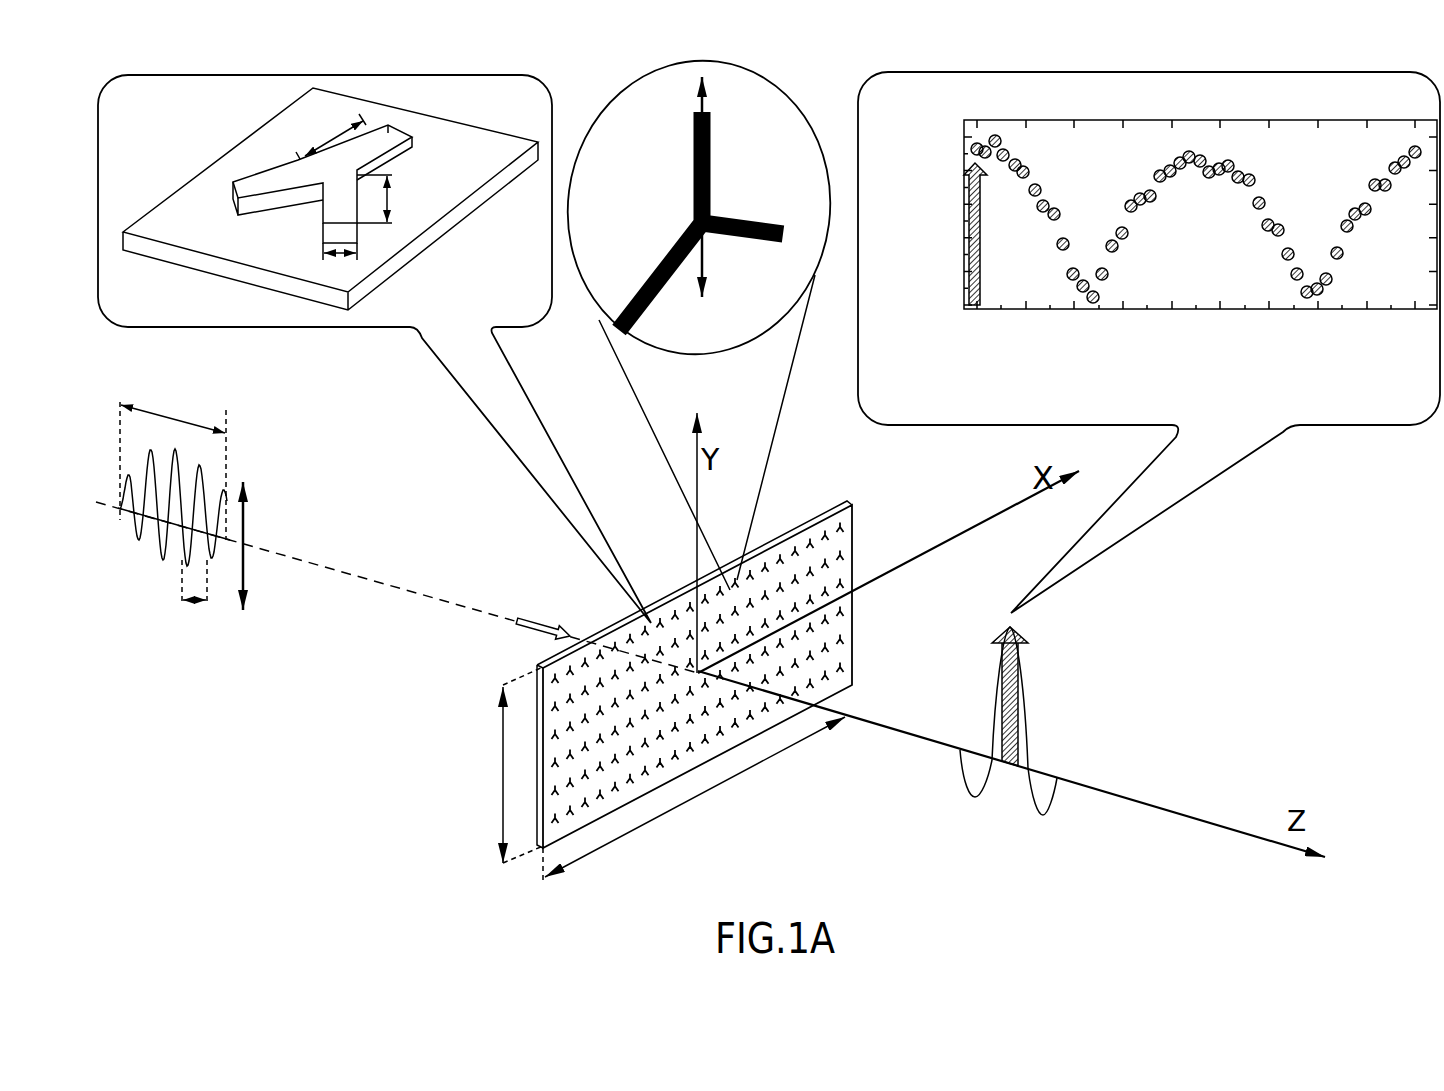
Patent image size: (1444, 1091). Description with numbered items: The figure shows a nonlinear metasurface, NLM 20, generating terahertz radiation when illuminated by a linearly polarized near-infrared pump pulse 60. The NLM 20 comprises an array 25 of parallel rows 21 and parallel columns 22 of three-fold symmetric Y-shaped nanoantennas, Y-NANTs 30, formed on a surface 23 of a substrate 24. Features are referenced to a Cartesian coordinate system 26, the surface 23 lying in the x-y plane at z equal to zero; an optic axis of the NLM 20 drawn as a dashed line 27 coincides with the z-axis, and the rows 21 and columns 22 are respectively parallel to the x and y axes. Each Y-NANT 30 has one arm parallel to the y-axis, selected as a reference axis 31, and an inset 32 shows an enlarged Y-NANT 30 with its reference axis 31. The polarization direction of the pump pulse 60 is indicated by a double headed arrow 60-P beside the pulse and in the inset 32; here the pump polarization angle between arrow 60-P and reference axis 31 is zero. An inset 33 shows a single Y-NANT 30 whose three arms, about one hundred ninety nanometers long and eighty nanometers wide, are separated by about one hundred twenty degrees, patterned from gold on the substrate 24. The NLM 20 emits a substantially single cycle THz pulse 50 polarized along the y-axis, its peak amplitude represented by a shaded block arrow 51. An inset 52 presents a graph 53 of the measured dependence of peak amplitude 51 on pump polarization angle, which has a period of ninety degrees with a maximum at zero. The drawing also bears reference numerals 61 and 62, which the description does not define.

The NLM 20 is at (523, 654).
The rows 21 is at (850, 555).
The columns 22 is at (823, 523).
The surface 23 is at (534, 835).
The substrate 24 is at (574, 834).
The array 25 is at (674, 675).
The Cartesian coordinate system 26 is at (700, 678).
The dashed line 27 is at (278, 552).
The Y-NANT 30 is at (683, 209).
The reference axis 31 is at (712, 112).
The inset 32 is at (699, 317).
The inset 33 is at (205, 75).
The THz pulse 50 is at (1063, 716).
The shaded block arrow 51 is at (1021, 667).
The inset 52 is at (1149, 325).
The graph 53 is at (1262, 165).
The NIR pump pulse 60 is at (141, 511).
The double headed arrow 60-P is at (704, 243).
The pump laser direction 61 is at (250, 665).
The incident direction 62 is at (400, 435).